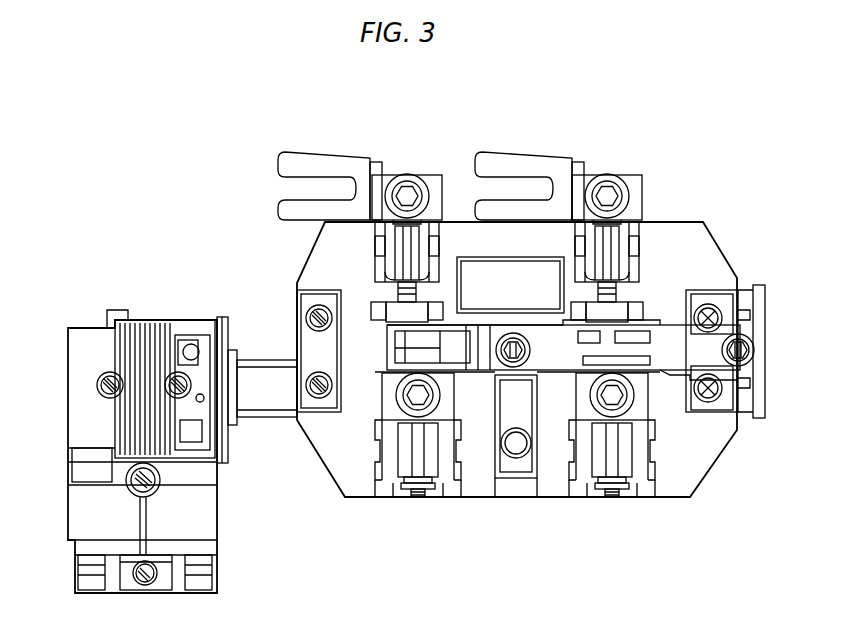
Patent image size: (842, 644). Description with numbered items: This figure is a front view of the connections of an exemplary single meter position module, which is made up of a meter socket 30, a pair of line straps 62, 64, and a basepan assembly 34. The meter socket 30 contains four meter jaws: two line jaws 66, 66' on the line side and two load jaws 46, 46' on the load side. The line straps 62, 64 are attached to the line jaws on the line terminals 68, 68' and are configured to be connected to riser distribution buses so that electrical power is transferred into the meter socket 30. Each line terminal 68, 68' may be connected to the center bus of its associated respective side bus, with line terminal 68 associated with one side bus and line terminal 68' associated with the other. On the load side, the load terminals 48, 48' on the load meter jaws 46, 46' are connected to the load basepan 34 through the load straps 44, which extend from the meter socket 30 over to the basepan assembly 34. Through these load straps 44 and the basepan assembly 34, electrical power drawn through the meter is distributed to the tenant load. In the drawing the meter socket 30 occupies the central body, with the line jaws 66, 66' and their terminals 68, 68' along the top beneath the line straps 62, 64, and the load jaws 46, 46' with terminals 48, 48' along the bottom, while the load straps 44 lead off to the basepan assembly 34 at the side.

The meter socket 30 is at (745, 352).
The basepan assembly 34 is at (83, 468).
The load straps 44 is at (263, 410).
The load jaw 46 is at (644, 479).
The load jaw 46' is at (418, 494).
The load terminal 48 is at (669, 428).
The load terminal 48' is at (479, 461).
The line strap 62 is at (527, 160).
The line strap 64 is at (280, 168).
The line jaw 66 is at (672, 272).
The line jaw 66' is at (352, 272).
The line terminal 68 is at (636, 198).
The line terminal 68' is at (424, 184).